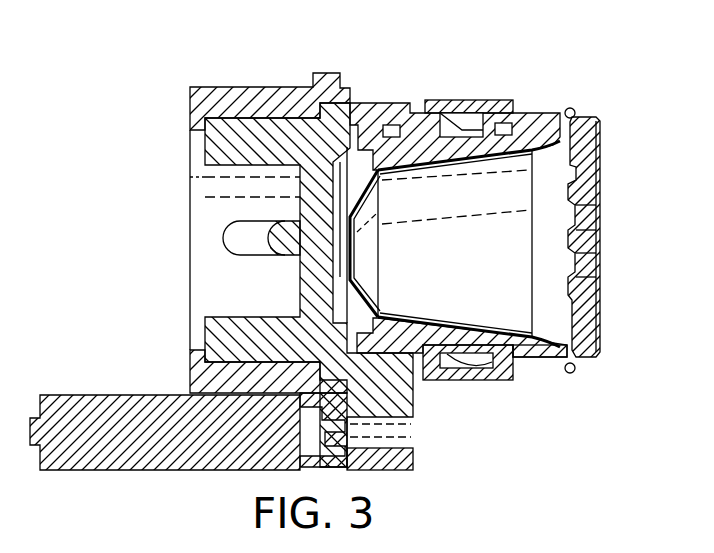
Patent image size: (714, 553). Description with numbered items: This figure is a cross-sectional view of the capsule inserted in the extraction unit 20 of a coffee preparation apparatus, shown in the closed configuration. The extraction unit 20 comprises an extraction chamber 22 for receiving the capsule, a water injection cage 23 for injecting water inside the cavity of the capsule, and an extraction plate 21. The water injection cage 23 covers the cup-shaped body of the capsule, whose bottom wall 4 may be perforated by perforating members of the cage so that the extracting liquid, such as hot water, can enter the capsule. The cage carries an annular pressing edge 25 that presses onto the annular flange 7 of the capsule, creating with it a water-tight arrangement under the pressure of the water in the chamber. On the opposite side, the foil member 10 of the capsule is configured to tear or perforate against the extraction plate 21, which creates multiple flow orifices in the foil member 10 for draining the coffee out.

The extraction unit 20 is at (150, 268).
The extraction plate 21 is at (600, 115).
The extraction chamber 22 is at (493, 356).
The water injection cage 23 is at (565, 112).
The bottom wall 4 is at (348, 279).
The foil member 10 is at (567, 250).
The annular flange 7 is at (577, 371).
The annular pressing edge 25 is at (560, 353).